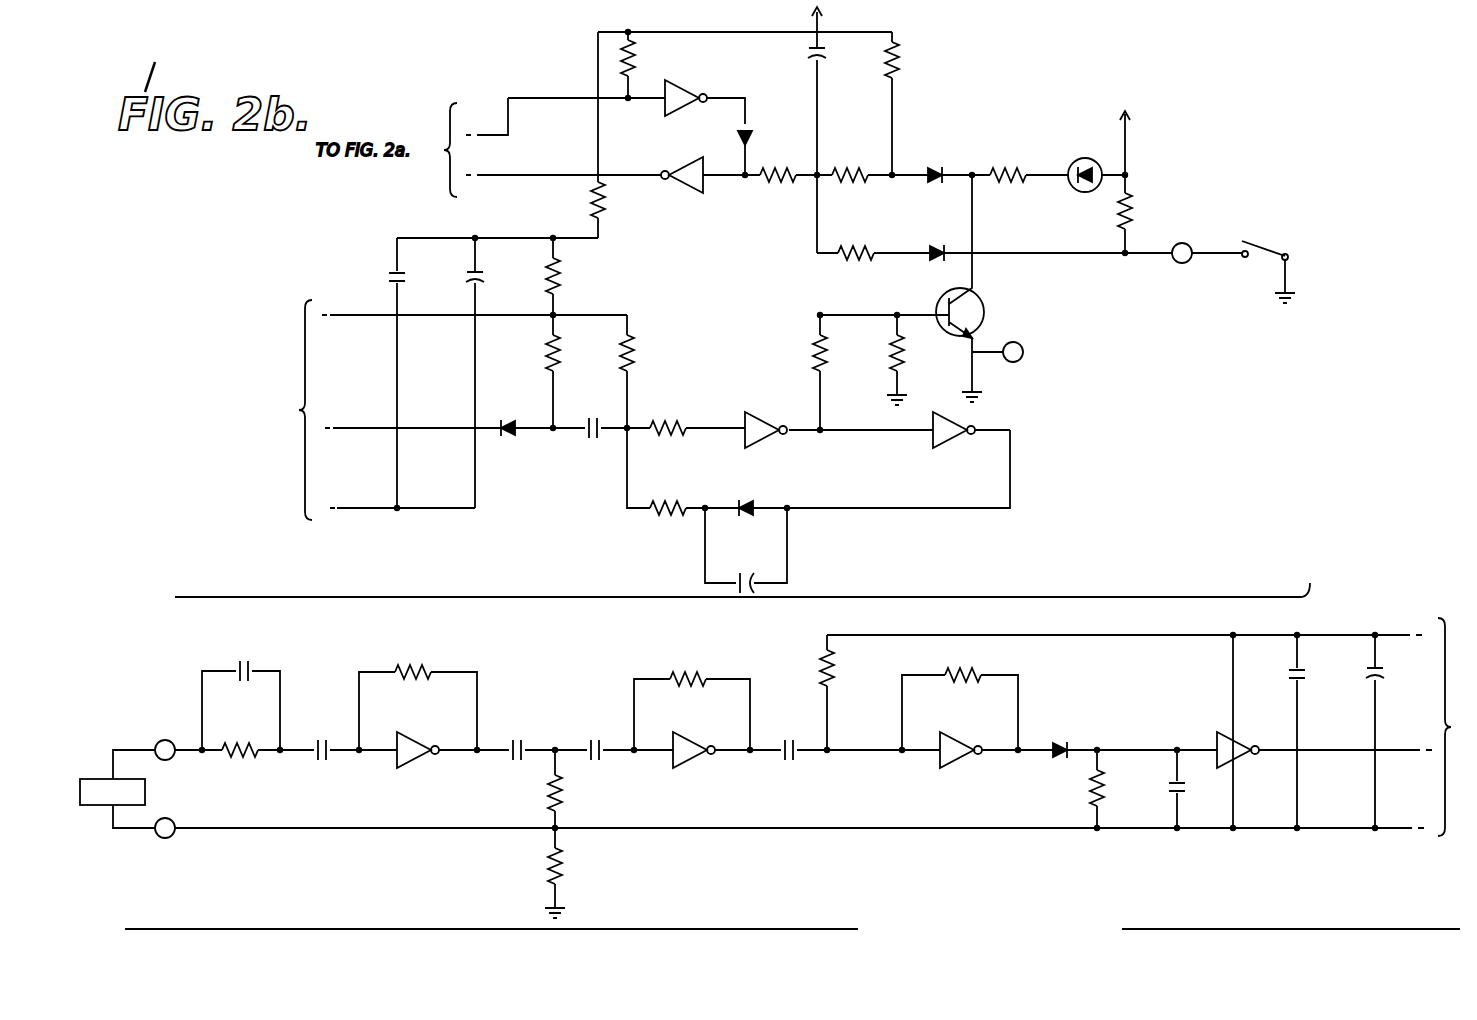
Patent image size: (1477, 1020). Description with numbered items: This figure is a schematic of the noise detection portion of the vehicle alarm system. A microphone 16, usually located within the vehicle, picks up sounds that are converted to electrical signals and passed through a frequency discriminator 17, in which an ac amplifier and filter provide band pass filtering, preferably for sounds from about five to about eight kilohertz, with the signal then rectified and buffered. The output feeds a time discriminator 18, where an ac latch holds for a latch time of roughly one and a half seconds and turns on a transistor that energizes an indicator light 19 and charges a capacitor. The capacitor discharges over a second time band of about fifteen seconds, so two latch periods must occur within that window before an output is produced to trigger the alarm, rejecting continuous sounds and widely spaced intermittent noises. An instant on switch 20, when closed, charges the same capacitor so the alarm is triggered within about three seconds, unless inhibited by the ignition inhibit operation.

The microphone 16 is at (147, 784).
The frequency discriminator 17 is at (713, 880).
The time discriminator 18 is at (716, 258).
The indicator light 19 is at (1075, 158).
The instant on switch 20 is at (1258, 257).